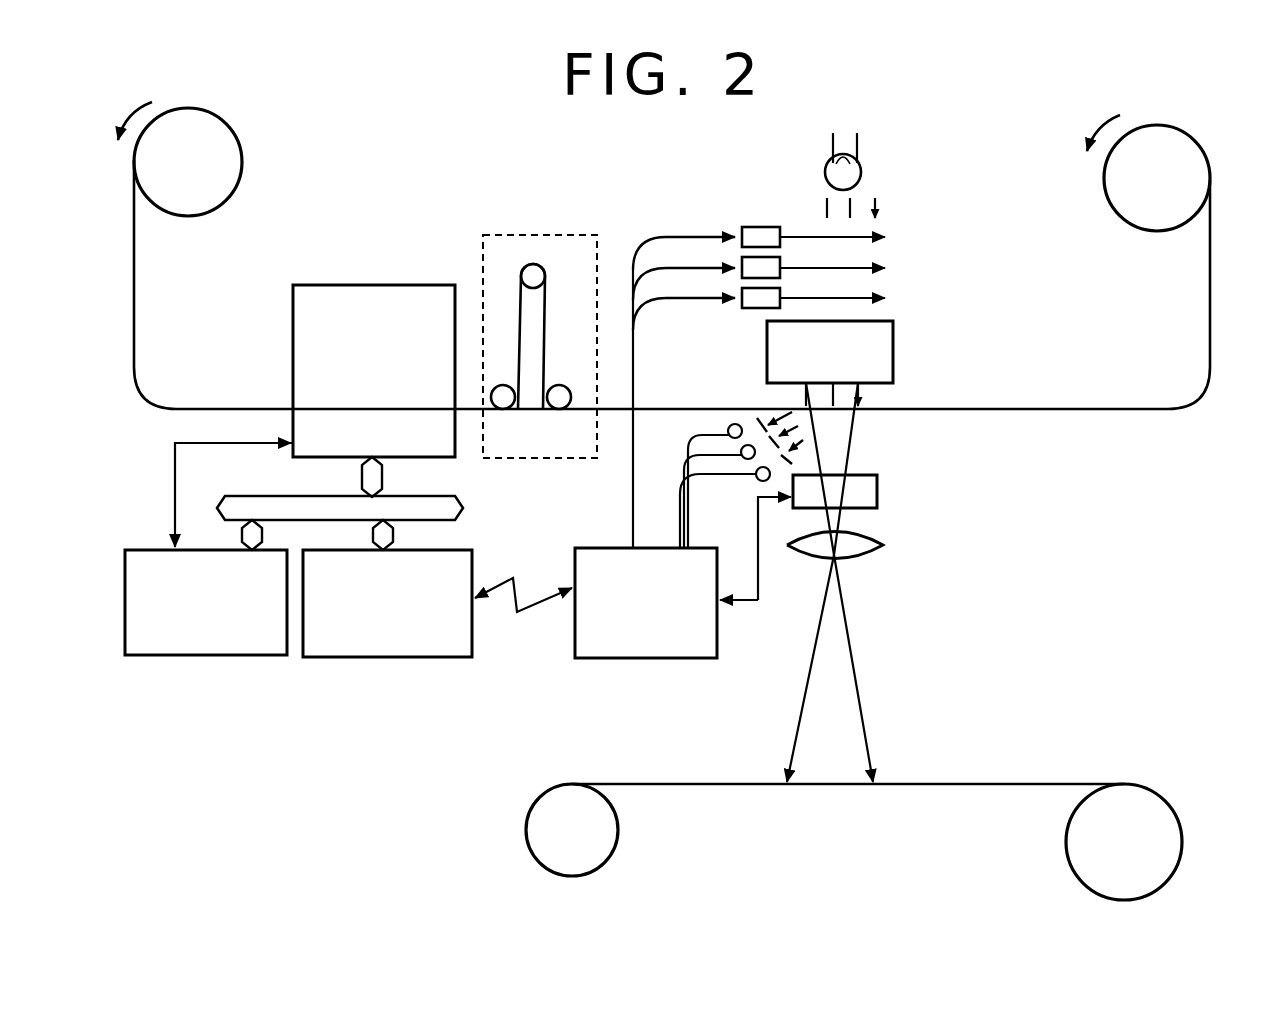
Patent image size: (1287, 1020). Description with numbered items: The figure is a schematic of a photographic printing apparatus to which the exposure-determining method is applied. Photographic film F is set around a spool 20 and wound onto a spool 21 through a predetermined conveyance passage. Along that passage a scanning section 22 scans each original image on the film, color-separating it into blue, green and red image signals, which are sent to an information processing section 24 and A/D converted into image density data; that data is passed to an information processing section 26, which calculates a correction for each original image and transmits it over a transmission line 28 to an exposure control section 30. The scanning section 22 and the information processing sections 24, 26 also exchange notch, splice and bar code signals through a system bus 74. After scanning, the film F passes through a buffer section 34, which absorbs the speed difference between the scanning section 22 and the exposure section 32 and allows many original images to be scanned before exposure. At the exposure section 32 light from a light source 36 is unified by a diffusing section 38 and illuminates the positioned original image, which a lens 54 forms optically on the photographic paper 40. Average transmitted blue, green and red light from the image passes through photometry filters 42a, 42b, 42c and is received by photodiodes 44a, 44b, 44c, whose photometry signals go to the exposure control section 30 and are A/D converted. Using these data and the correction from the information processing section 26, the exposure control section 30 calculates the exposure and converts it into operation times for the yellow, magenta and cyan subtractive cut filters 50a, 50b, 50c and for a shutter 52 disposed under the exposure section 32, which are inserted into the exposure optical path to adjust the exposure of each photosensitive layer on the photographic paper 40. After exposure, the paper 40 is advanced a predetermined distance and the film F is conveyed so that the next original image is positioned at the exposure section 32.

The spool 20 is at (241, 133).
The spool 21 is at (1203, 147).
The photographic film F is at (135, 258).
The scanning section 22 is at (390, 285).
The buffer section 34 is at (565, 235).
The light source 36 is at (859, 160).
The cut filter 50a is at (868, 238).
The cut filter 50b is at (868, 269).
The cut filter 50c is at (868, 299).
The diffusing section 38 is at (893, 353).
The exposure section 32 is at (830, 413).
The photometry filter 42a is at (757, 430).
The photometry filter 42b is at (770, 440).
The photometry filter 42c is at (790, 457).
The photodiode 44a is at (728, 428).
The photodiode 44b is at (741, 450).
The photodiode 44c is at (756, 480).
The shutter 52 is at (878, 492).
The lens 54 is at (883, 545).
The photographic paper 40 is at (972, 785).
The exposure control section 30 is at (672, 658).
The transmission line 28 is at (517, 612).
The system bus 74 is at (463, 503).
The information processing section 24 is at (210, 655).
The information processing section 26 is at (400, 657).